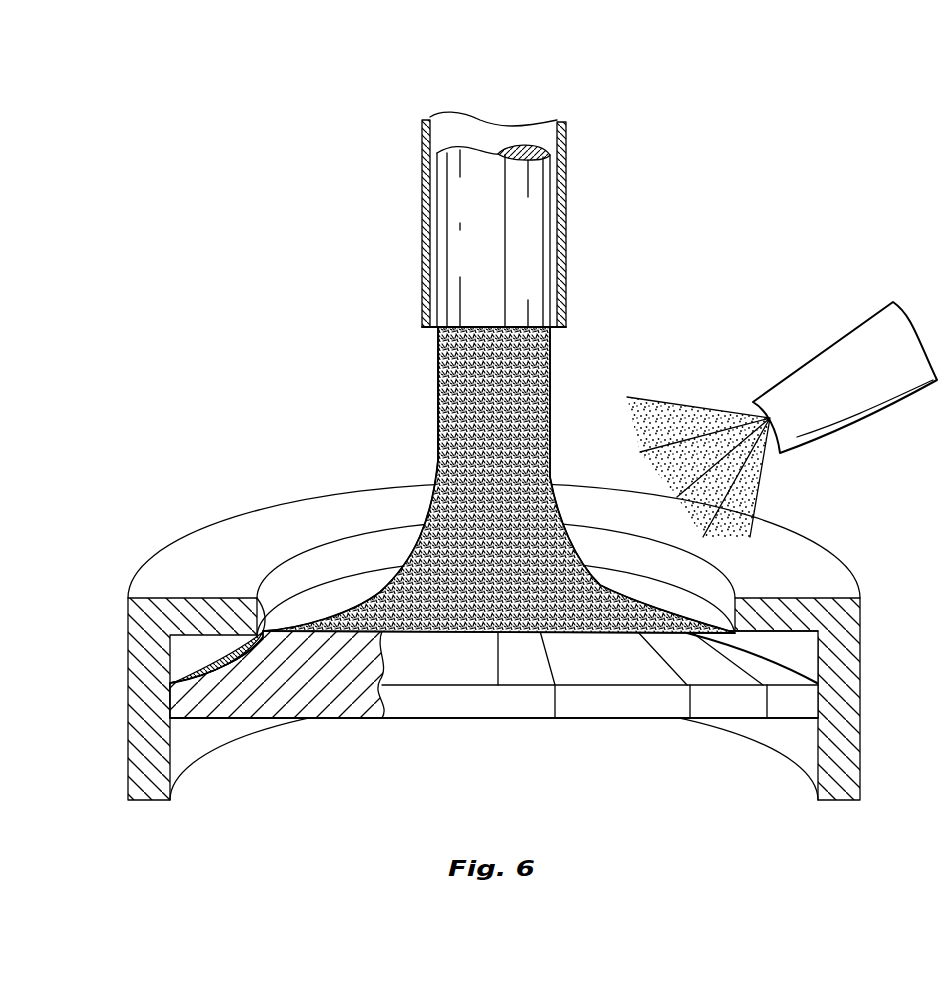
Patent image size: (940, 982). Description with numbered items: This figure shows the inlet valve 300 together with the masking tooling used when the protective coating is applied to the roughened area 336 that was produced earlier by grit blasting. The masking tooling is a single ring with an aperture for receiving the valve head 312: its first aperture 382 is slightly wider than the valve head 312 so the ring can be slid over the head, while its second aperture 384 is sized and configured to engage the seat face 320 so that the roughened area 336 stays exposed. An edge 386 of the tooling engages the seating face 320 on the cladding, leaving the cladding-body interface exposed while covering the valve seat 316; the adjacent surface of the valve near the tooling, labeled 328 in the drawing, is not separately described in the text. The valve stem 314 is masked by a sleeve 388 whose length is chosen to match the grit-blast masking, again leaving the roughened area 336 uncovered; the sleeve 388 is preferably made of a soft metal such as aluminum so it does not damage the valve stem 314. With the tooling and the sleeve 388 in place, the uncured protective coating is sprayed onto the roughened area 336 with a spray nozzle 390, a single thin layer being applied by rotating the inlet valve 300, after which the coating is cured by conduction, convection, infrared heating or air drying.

The inlet valve 300 is at (418, 408).
The valve head 312 is at (585, 720).
The valve stem 314 is at (551, 385).
The valve seat 316 is at (470, 663).
The seat face 320 is at (258, 598).
The substrate edge 328 is at (226, 669).
The roughened area 336 is at (487, 538).
The first aperture 382 is at (190, 767).
The second aperture 384 is at (257, 590).
The edge 386 is at (222, 662).
The sleeve 388 is at (432, 273).
The spray nozzle 390 is at (823, 345).